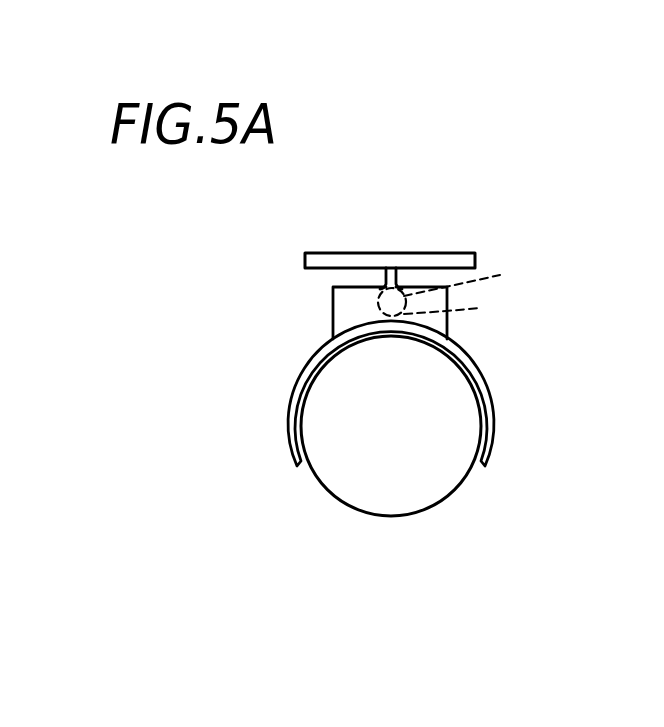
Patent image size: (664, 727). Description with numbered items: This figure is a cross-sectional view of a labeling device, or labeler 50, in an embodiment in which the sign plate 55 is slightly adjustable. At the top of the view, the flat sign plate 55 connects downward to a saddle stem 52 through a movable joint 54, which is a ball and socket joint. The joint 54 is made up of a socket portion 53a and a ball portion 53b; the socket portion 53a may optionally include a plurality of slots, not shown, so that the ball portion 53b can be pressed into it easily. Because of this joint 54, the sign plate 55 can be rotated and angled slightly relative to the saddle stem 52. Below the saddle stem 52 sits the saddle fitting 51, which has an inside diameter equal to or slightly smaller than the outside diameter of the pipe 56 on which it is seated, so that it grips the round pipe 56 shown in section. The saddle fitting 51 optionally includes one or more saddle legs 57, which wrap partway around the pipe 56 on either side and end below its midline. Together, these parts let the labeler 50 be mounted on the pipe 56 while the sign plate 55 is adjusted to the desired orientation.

The labeler 50 is at (571, 211).
The saddle fitting 51 is at (291, 400).
The saddle stem 52 is at (447, 325).
The socket portion 53a is at (350, 303).
The ball portion 53b is at (480, 278).
The movable joint 54 is at (461, 308).
The sign plate 55 is at (397, 252).
The pipe 56 is at (437, 508).
The saddle legs 57 is at (495, 398).